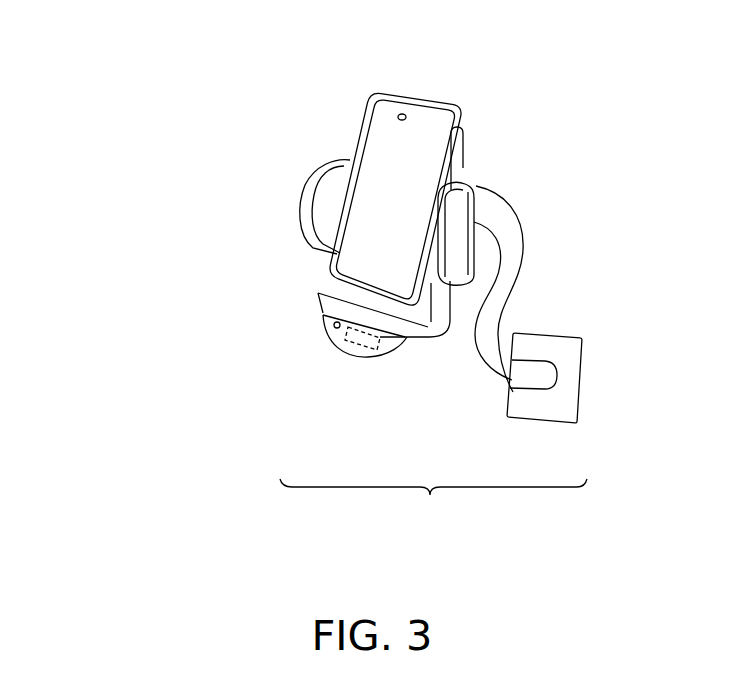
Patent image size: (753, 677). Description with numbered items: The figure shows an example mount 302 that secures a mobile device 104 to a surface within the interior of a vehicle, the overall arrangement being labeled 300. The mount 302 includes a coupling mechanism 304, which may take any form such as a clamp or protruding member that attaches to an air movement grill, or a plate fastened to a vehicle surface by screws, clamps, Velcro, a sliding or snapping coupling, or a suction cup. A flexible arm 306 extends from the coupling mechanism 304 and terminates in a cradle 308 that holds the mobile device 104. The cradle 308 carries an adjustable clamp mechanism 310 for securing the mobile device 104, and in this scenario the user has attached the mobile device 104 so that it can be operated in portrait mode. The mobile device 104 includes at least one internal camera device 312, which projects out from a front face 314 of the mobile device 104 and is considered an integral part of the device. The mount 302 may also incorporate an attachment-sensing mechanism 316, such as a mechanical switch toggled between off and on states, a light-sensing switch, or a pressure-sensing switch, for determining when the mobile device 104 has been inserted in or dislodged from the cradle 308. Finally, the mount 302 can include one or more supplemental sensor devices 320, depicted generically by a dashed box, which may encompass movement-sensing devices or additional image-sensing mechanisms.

The camera mount system 300 is at (395, 596).
The mobile device 104 is at (432, 137).
The internal camera device 312 is at (393, 113).
The adjustable clamp mechanism 310 is at (325, 212).
The cradle 308 is at (472, 178).
The flexible arm 306 is at (512, 243).
The coupling mechanism 304 is at (563, 355).
The front face 314 is at (350, 263).
The attachment-sensing mechanism 316 is at (317, 323).
The supplemental sensor devices 320 is at (350, 345).
The mount 302 is at (433, 519).